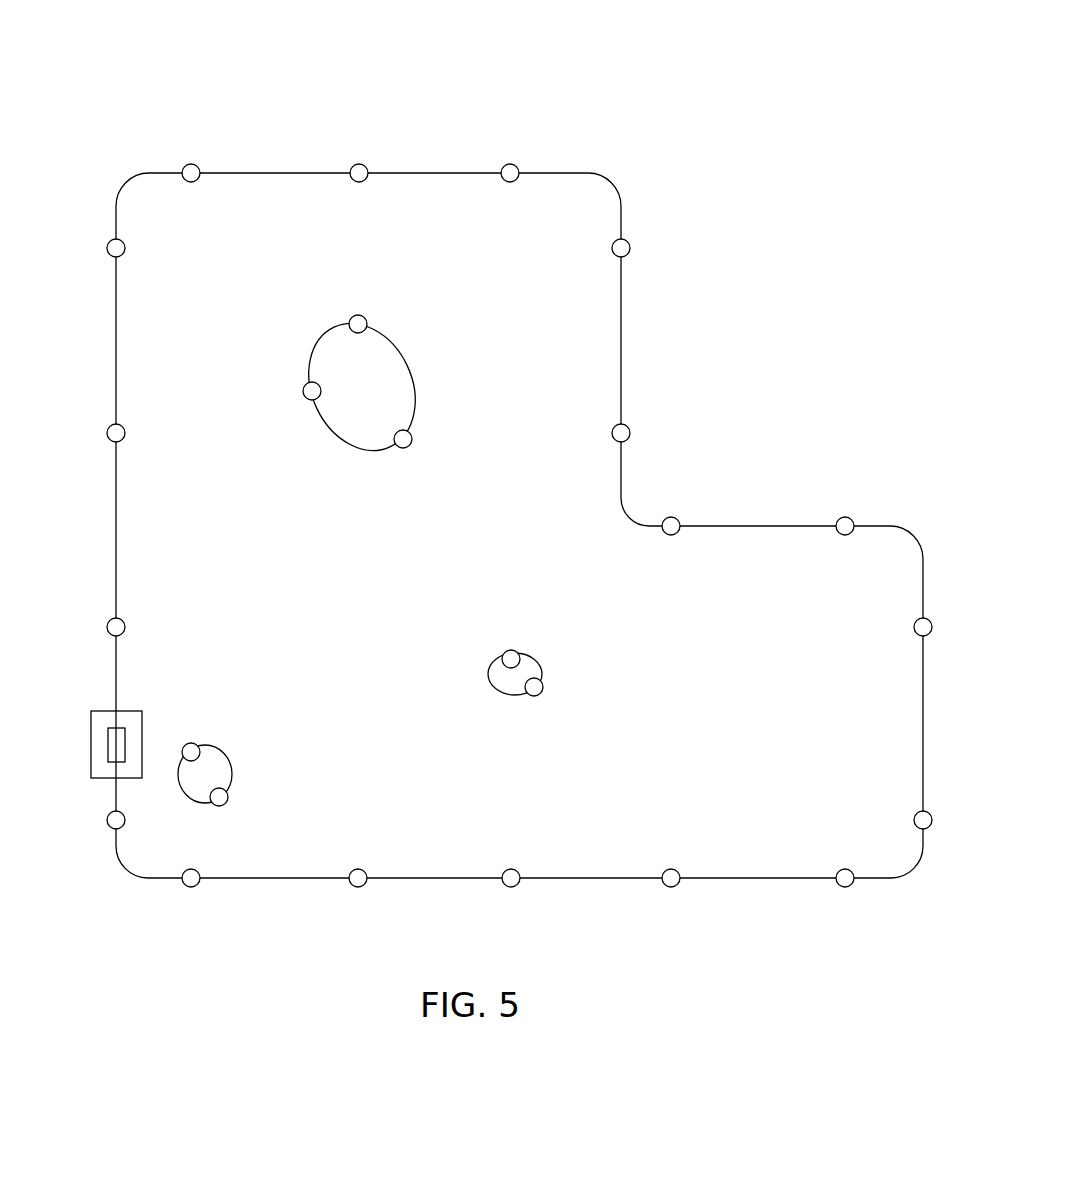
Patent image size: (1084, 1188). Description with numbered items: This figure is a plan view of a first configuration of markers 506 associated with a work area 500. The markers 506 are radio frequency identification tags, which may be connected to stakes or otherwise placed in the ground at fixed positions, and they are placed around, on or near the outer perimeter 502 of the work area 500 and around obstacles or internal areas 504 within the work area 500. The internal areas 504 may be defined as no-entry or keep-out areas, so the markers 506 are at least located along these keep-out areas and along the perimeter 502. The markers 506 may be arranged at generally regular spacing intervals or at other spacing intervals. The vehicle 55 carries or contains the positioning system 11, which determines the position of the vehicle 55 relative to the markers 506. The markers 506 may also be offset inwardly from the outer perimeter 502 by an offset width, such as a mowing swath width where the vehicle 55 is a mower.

The work area 500 is at (286, 207).
The outer perimeter 502 is at (423, 172).
The internal areas 504 is at (412, 370).
The markers 506 is at (112, 244).
The vehicle 55 is at (142, 721).
The positioning system 11 is at (127, 728).